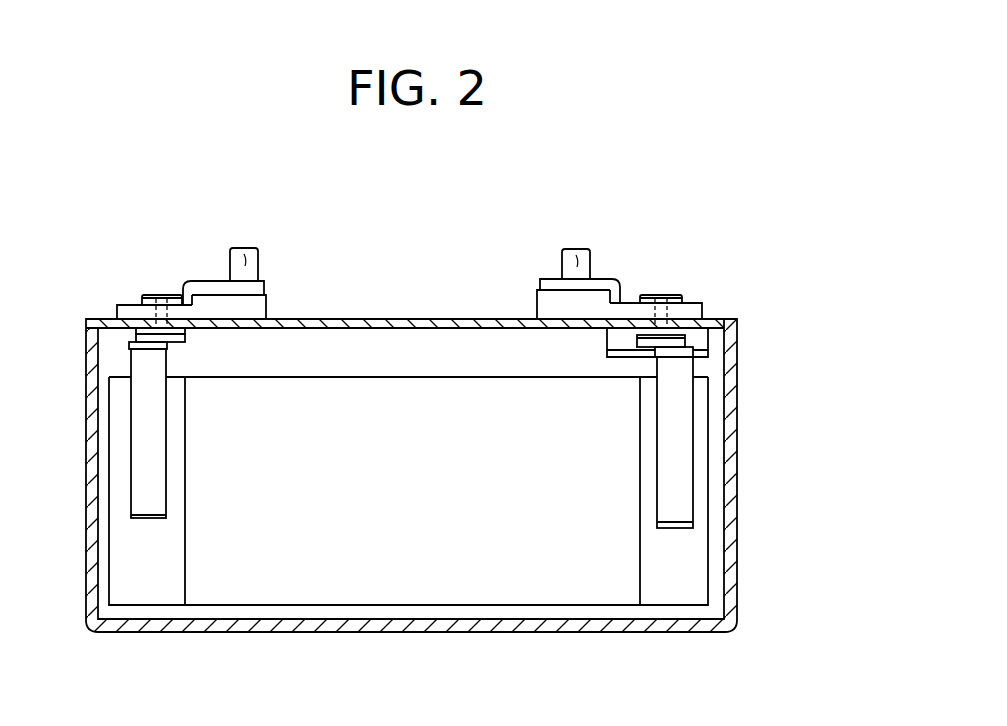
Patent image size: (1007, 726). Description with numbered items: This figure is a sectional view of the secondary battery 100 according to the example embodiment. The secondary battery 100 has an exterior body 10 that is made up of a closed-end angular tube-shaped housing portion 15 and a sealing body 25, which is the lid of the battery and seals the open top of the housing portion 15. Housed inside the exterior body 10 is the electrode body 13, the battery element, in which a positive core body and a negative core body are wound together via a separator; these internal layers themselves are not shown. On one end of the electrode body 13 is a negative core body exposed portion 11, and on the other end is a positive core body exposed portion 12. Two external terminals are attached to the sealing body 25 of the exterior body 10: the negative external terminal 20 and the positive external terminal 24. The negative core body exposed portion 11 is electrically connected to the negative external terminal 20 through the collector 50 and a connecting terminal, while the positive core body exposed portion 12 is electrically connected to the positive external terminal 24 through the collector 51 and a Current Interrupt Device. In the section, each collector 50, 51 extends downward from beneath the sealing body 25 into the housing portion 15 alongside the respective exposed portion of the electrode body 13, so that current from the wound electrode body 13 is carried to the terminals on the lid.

The secondary battery 100 is at (359, 271).
The exterior body 10 is at (793, 283).
The housing portion 15 is at (732, 396).
The sealing body 25 is at (711, 320).
The negative external terminal 20 is at (243, 268).
The positive external terminal 24 is at (574, 268).
The negative core body exposed portion 11 is at (147, 562).
The positive core body exposed portion 12 is at (672, 560).
The electrode body 13 is at (413, 510).
The collector 50 is at (157, 443).
The collector 51 is at (663, 440).